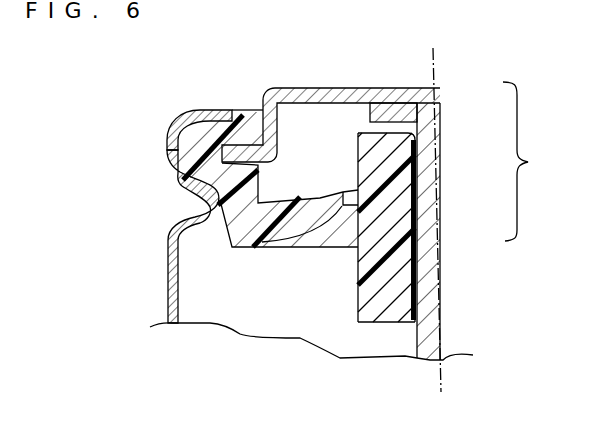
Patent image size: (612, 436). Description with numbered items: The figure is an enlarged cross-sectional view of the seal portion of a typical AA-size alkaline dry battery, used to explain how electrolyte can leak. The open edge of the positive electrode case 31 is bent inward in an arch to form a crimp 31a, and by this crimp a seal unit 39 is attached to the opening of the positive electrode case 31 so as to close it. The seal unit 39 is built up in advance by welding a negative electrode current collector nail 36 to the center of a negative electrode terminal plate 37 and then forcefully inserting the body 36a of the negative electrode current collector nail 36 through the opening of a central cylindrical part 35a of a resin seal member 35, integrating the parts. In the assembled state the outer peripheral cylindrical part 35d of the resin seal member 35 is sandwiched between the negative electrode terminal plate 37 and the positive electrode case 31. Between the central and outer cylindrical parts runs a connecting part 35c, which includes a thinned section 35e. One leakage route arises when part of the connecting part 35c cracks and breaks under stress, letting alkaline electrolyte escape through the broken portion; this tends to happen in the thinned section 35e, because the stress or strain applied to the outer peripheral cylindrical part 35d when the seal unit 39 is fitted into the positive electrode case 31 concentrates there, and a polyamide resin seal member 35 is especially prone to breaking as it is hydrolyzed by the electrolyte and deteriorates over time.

The positive electrode case 31 is at (168, 278).
The crimp 31a is at (173, 130).
The resin seal member 35 is at (410, 228).
The central cylindrical part 35a is at (389, 307).
The connecting part 35c is at (296, 247).
The outer peripheral cylindrical part 35d is at (195, 150).
The thinned section 35e is at (342, 191).
The negative electrode current collector nail 36 is at (419, 170).
The body of negative electrode current collector nail 36a is at (425, 315).
The negative electrode terminal plate 37 is at (430, 94).
The seal unit 39 is at (531, 161).